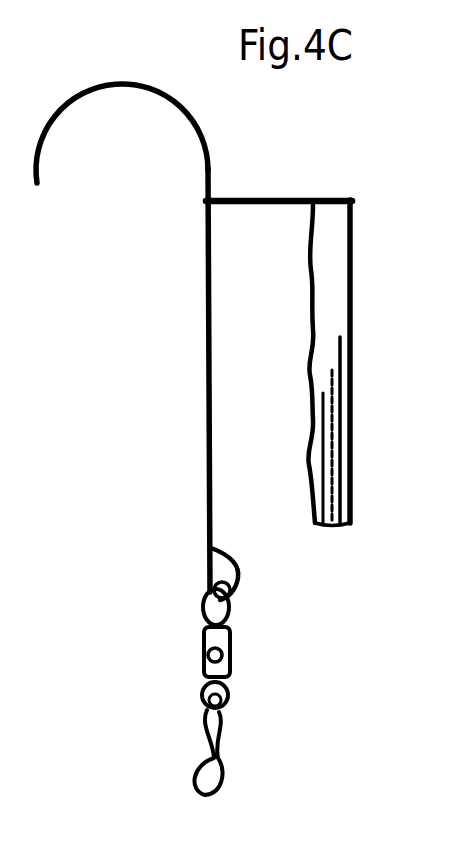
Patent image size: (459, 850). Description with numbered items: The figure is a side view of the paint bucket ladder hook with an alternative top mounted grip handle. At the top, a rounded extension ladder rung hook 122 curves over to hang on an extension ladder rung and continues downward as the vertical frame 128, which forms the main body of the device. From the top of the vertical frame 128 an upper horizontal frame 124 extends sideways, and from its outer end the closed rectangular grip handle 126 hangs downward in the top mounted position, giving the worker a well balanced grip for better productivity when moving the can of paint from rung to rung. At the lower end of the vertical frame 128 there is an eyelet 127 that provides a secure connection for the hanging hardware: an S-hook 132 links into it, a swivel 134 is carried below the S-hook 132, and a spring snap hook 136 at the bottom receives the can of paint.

The rounded extension ladder rung hook 122 is at (113, 84).
The upper horizontal frame 124 is at (273, 200).
The closed rectangular grip handle 126 is at (351, 297).
The hook loop 127 is at (238, 572).
The vertical frame 128 is at (208, 407).
The S-hook 132 is at (228, 613).
The swivel 134 is at (230, 665).
The spring snap hook 136 is at (222, 757).